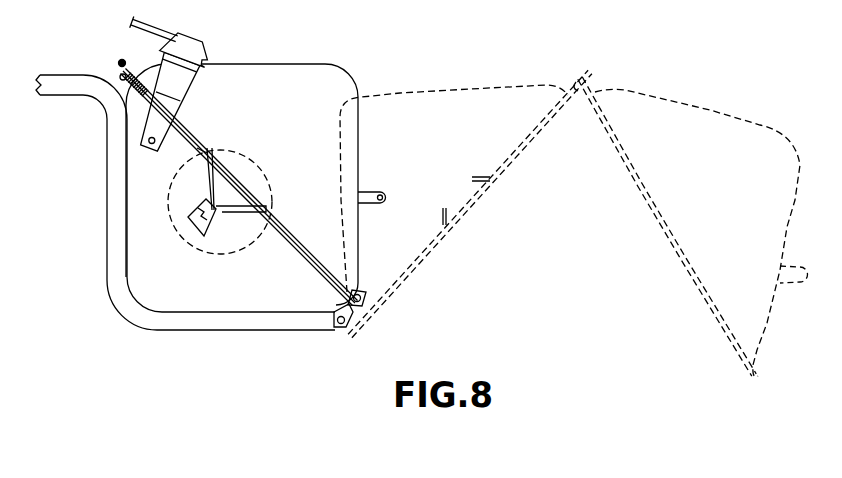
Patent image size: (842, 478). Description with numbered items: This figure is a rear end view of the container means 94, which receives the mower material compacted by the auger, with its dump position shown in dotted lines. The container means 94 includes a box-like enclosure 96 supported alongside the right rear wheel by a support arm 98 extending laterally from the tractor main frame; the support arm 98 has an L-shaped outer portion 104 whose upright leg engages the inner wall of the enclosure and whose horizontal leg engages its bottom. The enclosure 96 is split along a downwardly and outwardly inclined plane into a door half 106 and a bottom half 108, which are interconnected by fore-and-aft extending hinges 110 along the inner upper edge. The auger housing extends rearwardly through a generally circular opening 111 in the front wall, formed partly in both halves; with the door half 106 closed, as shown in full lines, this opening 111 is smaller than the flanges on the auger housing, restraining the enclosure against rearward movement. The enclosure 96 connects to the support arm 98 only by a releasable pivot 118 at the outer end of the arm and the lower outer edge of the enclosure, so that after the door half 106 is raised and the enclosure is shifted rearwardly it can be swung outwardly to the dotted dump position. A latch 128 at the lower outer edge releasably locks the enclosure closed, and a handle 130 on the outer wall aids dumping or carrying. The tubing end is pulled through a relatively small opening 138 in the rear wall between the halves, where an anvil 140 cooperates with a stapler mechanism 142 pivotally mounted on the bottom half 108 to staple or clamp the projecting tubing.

The container means 94 is at (311, 56).
The box-like enclosure 96 is at (334, 79).
The support arm 98 is at (55, 77).
The L-shaped outer portion 104 is at (226, 330).
The door half 106 is at (252, 67).
The bottom half 108 is at (130, 268).
The hinges 110 is at (121, 60).
The opening 111 is at (245, 249).
The pivot 118 is at (338, 325).
The latch 128 is at (363, 300).
The handle 130 is at (385, 195).
The opening 138 is at (219, 215).
The anvil 140 is at (186, 219).
The stapler mechanism 142 is at (190, 35).